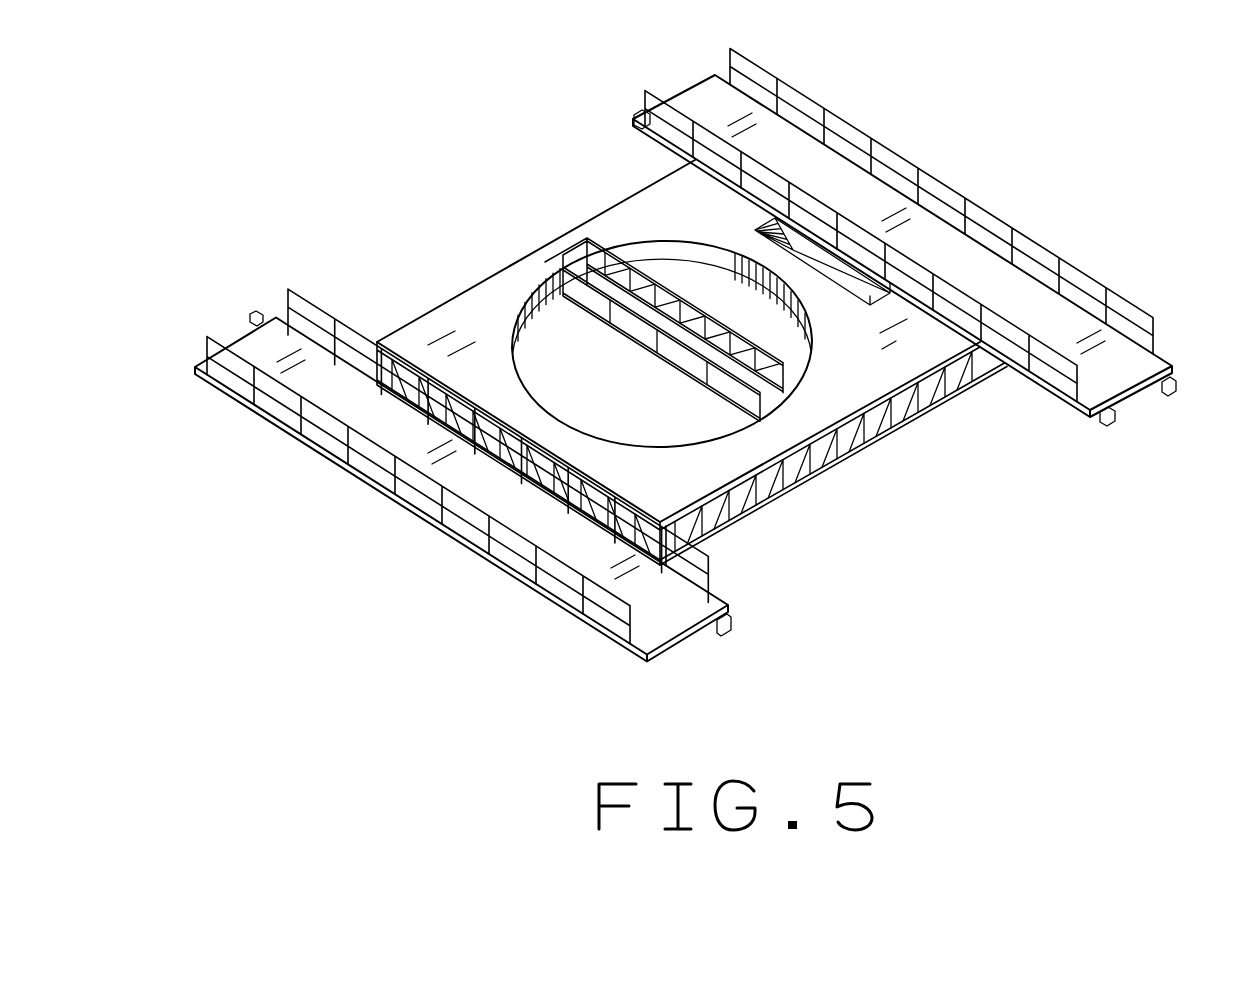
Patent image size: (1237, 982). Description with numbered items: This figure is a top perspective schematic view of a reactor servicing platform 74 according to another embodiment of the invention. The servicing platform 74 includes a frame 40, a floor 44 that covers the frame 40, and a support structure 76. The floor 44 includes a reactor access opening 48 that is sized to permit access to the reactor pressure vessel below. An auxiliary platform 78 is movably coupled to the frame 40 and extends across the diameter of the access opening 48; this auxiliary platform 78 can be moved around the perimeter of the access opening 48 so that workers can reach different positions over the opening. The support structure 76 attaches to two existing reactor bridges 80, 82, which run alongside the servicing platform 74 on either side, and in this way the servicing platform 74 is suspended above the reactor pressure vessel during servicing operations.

The frame 40 is at (834, 476).
The floor 44 is at (730, 455).
The reactor access opening 48 is at (660, 420).
The reactor servicing platform 74 is at (700, 367).
The support structure 76 is at (1005, 394).
The auxiliary platform 78 is at (618, 323).
The reactor bridge 80 is at (1137, 398).
The reactor bridge 82 is at (677, 647).